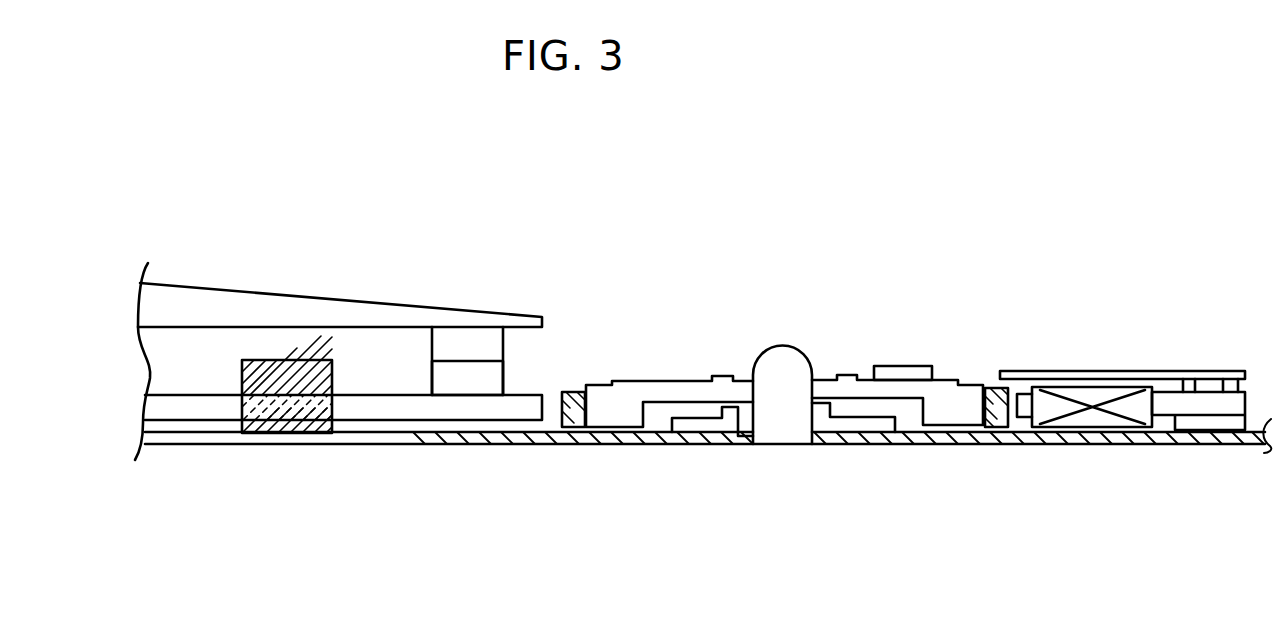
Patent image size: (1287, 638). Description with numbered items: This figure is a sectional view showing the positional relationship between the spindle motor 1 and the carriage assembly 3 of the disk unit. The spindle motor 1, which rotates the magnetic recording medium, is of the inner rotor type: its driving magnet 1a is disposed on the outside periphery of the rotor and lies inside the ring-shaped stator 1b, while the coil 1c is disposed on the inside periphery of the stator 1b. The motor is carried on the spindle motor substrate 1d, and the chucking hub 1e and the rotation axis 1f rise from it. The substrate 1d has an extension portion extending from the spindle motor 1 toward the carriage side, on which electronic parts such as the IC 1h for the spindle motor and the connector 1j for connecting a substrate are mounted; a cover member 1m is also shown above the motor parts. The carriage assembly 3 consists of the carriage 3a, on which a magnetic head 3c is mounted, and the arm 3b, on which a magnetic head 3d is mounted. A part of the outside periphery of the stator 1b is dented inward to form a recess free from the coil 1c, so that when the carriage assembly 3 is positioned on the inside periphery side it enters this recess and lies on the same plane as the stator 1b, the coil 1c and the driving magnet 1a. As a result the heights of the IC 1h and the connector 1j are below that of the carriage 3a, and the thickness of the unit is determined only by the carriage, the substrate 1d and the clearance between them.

The spindle motor 1 is at (955, 375).
The driving magnet 1a is at (998, 412).
The ring-shaped stator 1b is at (1165, 407).
The coil 1c is at (1100, 417).
The spindle motor substrate 1d is at (922, 443).
The chucking hub 1e is at (847, 373).
The rotation axis 1f is at (790, 356).
The IC for the spindle motor 1h is at (305, 435).
The connector 1j is at (287, 407).
The cover plate 1m is at (1127, 372).
The carriage assembly 3 is at (158, 374).
The carriage 3a is at (225, 413).
The arm 3b is at (318, 287).
The magnetic head 3c is at (492, 377).
The magnetic head 3d is at (478, 338).